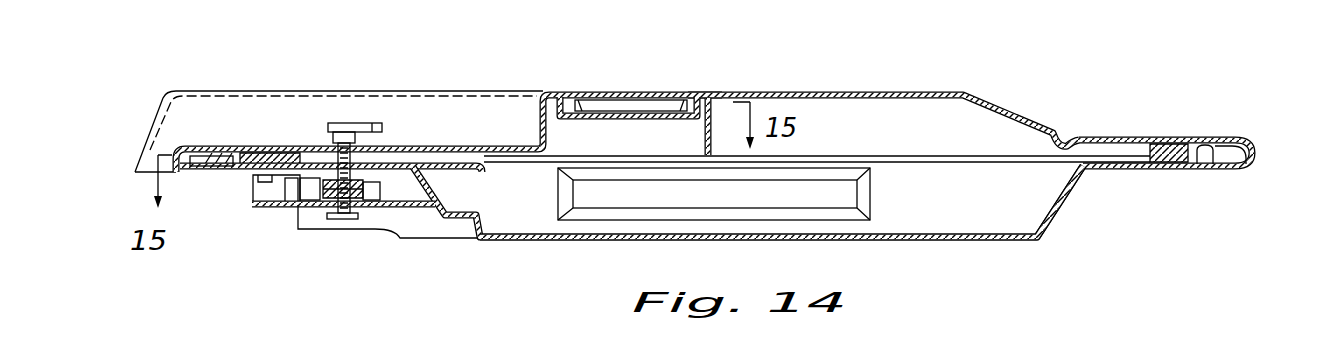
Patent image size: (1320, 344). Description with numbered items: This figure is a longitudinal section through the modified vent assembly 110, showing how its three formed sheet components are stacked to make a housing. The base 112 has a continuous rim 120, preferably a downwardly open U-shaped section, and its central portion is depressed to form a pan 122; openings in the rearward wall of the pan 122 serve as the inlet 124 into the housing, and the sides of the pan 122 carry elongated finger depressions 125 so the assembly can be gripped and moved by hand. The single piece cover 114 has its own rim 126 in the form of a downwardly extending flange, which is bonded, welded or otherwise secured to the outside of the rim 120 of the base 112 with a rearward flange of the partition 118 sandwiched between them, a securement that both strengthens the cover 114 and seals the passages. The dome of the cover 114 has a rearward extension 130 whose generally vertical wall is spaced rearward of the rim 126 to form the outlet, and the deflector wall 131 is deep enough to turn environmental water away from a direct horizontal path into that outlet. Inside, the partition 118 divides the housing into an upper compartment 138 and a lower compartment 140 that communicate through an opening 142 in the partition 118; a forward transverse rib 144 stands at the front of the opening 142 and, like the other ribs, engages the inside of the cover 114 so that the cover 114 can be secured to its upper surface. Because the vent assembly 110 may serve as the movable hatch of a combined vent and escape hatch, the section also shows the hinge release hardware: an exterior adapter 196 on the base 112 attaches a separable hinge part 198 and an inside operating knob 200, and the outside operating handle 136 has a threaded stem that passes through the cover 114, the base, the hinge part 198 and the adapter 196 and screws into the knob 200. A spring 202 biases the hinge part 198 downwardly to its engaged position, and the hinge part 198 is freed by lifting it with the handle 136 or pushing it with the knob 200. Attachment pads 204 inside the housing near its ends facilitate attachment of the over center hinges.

The vent assembly 110 is at (1067, 112).
The base 112 is at (1125, 167).
The cover 114 is at (963, 92).
The partition 118 is at (714, 128).
The rim 120 is at (1205, 150).
The pan 122 is at (1020, 240).
The inlet 124 is at (428, 183).
The finger depressions 125 is at (613, 198).
The rim 126 is at (1253, 148).
The rearward extension 130 is at (158, 128).
The deflector wall 131 is at (150, 143).
The operating handle 136 is at (358, 122).
The upper compartment 138 is at (597, 103).
The lower compartment 140 is at (537, 215).
The opening 142 is at (633, 116).
The forward transverse rib 144 is at (694, 92).
The exterior adapter 196 is at (253, 195).
The separable hinge part 198 is at (373, 190).
The inside operating knob 200 is at (333, 219).
The spring 202 is at (327, 178).
The attachment pads 204 is at (272, 157).